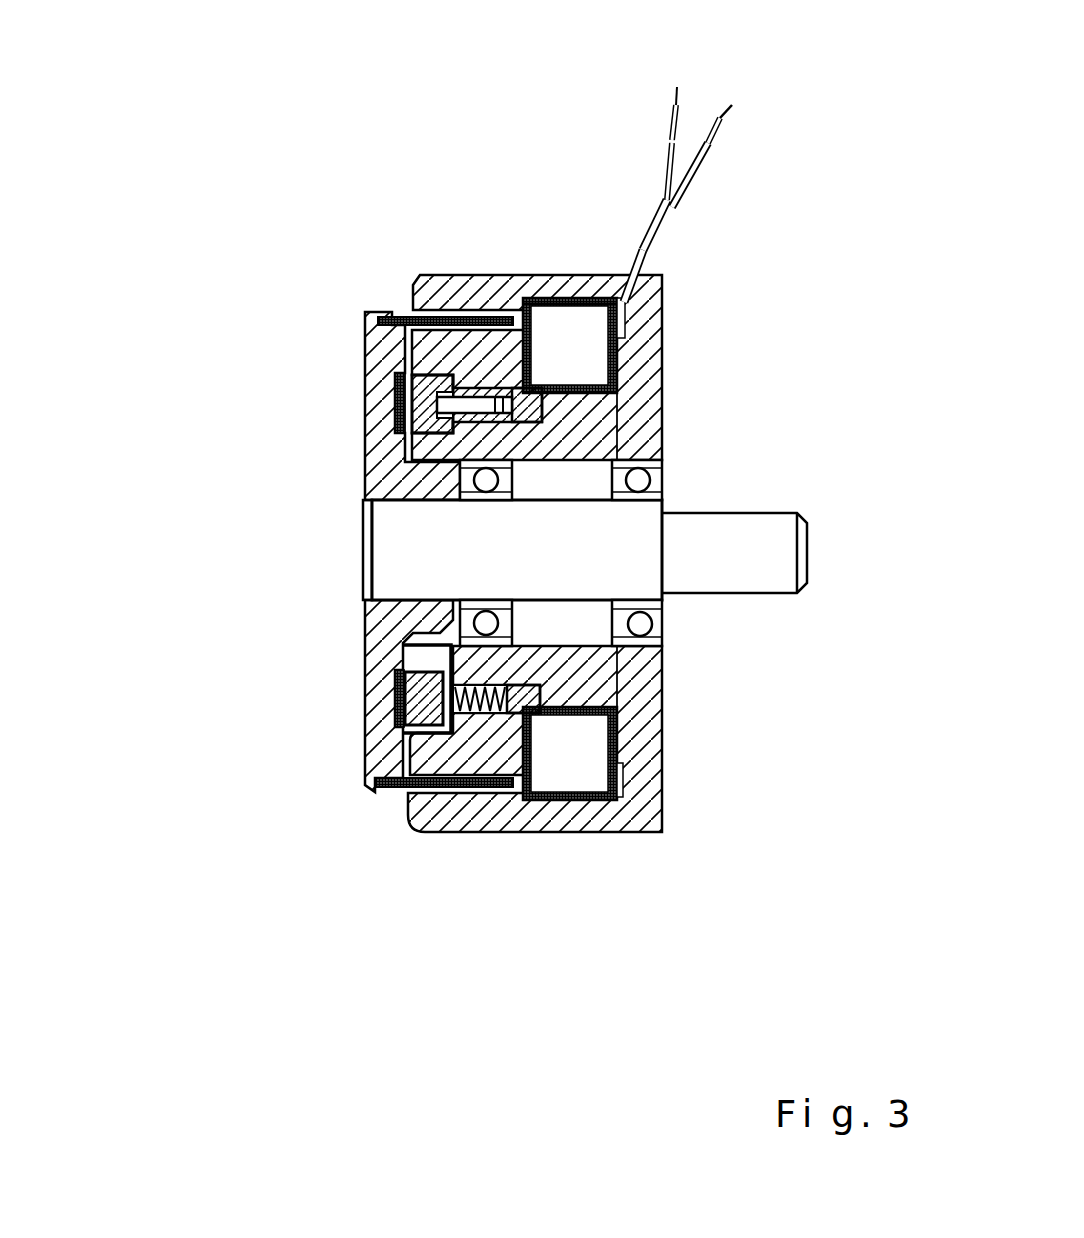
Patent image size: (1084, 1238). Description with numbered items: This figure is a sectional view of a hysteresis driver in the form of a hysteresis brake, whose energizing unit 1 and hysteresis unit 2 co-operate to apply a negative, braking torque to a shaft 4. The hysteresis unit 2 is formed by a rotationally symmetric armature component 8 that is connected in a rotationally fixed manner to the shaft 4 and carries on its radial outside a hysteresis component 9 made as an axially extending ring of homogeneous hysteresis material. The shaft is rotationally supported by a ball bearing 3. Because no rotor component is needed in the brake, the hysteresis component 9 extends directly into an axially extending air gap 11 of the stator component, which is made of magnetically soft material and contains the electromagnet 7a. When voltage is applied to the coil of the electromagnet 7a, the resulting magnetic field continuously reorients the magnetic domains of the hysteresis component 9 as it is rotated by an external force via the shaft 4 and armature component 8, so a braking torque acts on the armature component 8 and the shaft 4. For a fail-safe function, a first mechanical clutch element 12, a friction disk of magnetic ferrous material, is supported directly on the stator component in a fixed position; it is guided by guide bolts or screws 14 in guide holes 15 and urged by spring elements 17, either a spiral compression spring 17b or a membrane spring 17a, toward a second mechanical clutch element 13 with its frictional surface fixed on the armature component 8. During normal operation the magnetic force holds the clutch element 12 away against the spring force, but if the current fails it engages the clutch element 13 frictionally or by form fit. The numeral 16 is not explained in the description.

The energizing unit 1 is at (569, 205).
The hysteresis unit 2 is at (350, 320).
The ball bearing 3 is at (643, 624).
The shaft 4 is at (703, 547).
The electromagnet 7a is at (573, 773).
The armature component 8 is at (395, 452).
The hysteresis component 9 is at (520, 390).
The air gap 11 is at (472, 786).
The first mechanical clutch element 12 is at (406, 703).
The second mechanical clutch element 13 is at (437, 408).
The guide bolts or screws 14 is at (400, 385).
The guide holes 15 is at (483, 428).
The upper flange plate 16 is at (425, 273).
The spring elements 17 is at (496, 699).
The membrane spring 17a is at (447, 662).
The spiral compression spring 17b is at (400, 697).